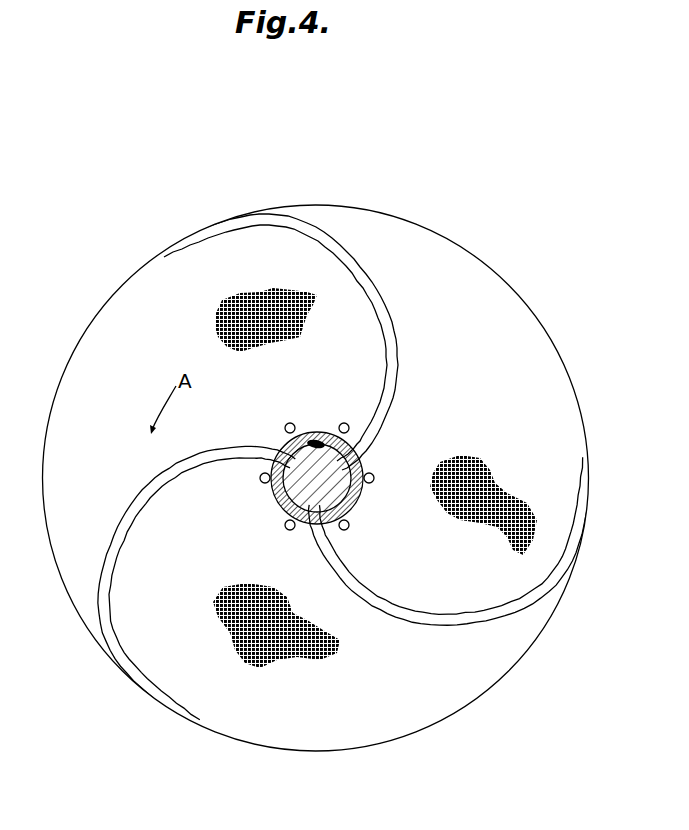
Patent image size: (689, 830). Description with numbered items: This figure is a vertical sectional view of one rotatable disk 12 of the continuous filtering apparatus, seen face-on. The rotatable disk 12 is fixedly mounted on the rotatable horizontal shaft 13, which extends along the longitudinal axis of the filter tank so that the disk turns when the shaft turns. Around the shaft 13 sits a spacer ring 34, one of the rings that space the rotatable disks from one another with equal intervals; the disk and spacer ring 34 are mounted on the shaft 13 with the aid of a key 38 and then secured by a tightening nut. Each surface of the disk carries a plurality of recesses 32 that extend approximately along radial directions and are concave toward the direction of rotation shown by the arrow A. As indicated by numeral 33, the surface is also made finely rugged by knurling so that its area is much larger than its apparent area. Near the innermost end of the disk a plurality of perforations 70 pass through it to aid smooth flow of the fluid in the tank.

The rotatable disk 12 is at (504, 305).
The rotatable horizontal shaft 13 is at (290, 488).
The recesses 32 is at (333, 238).
The finely rugged surface 33 is at (235, 297).
The spacer ring 34 is at (362, 499).
The key 38 is at (317, 440).
The perforations 70 is at (266, 472).